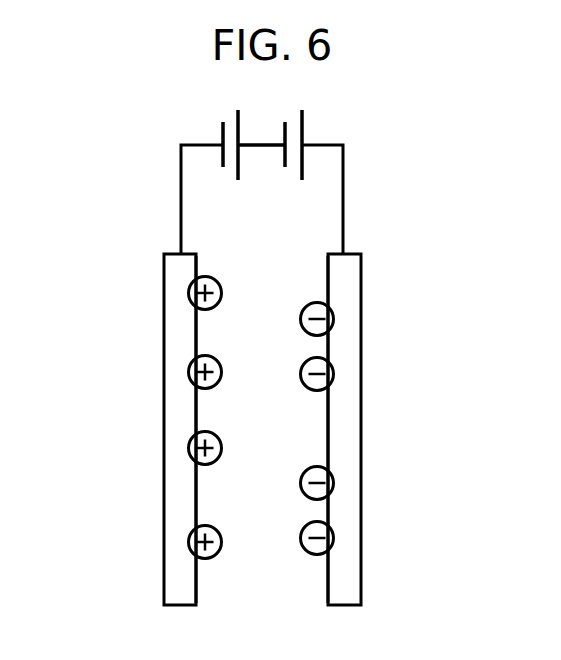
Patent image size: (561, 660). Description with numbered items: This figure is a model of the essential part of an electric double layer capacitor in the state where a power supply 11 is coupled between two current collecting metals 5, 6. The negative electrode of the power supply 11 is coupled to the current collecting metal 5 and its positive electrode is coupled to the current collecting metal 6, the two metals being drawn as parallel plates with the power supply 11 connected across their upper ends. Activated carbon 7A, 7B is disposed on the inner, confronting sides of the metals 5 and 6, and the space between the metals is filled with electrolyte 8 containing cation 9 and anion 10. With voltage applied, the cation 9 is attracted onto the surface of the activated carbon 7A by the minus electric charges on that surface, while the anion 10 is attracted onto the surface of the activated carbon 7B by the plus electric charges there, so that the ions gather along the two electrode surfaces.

The current collecting metal 5 is at (173, 558).
The current collecting metal 6 is at (347, 585).
The activated carbon 7A is at (195, 268).
The activated carbon 7B is at (330, 287).
The electrolyte 8 is at (307, 428).
The cation 9 is at (190, 365).
The anion 10 is at (330, 477).
The power supply 11 is at (322, 125).